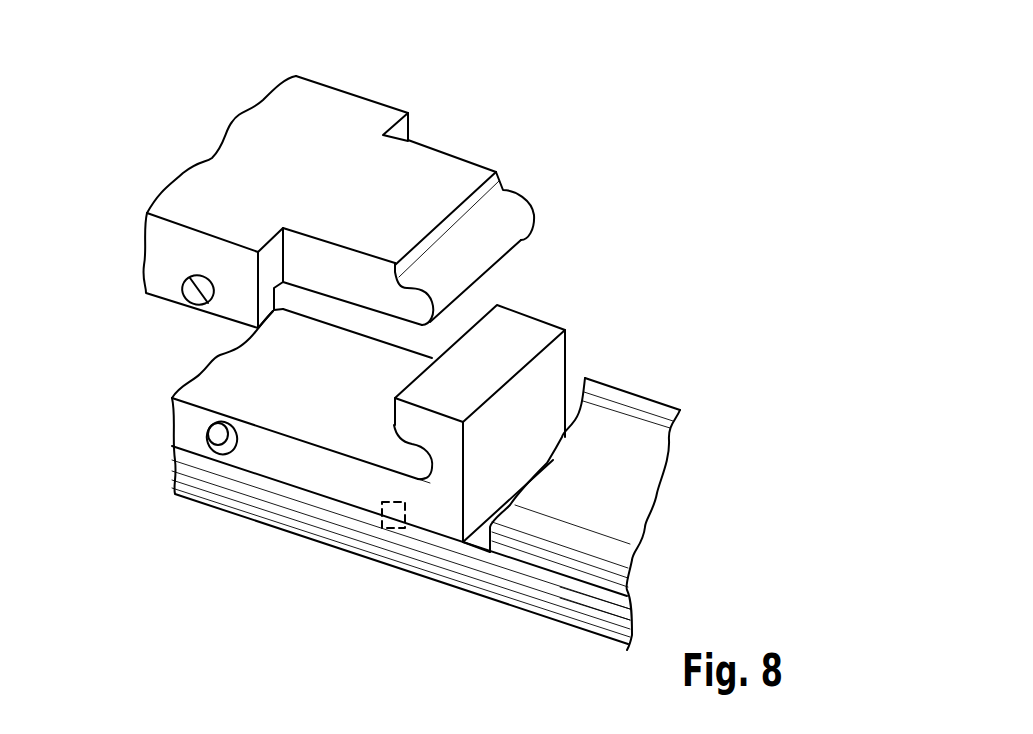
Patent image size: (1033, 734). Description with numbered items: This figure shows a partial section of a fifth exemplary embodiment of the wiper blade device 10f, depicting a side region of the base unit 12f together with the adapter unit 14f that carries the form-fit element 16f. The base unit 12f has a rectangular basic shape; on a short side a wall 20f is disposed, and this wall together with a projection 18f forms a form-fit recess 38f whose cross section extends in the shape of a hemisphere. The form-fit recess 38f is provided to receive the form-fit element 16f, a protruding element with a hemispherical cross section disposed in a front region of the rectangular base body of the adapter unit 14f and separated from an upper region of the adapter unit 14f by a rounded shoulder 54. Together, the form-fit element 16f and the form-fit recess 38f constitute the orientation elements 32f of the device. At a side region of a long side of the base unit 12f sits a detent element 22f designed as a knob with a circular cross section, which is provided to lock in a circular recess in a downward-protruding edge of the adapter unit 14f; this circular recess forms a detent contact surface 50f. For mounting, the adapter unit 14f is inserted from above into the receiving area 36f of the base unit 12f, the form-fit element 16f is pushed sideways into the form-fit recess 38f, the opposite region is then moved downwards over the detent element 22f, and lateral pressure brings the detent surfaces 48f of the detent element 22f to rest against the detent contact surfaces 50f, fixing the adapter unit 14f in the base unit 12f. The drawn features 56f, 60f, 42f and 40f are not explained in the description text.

The wiper blade device 10f is at (620, 227).
The adapter unit 14f is at (365, 75).
The rounded shoulder 54 is at (505, 193).
The form-fit element 16f is at (513, 210).
The orientation elements 32f is at (492, 247).
The detent contact surface 50f is at (190, 305).
The wall 20f is at (540, 377).
The projection 18f is at (412, 470).
The form-fit recess 38f is at (422, 482).
The base unit 12f is at (453, 545).
The receiving area 36f is at (327, 440).
The detent element 22f is at (218, 442).
The detent surfaces 48f is at (233, 457).
The detail region (dashed) 56f is at (397, 530).
The stop edge 60f is at (478, 540).
The rail profile lower portion 42f is at (597, 607).
The guide rail 40f is at (630, 423).